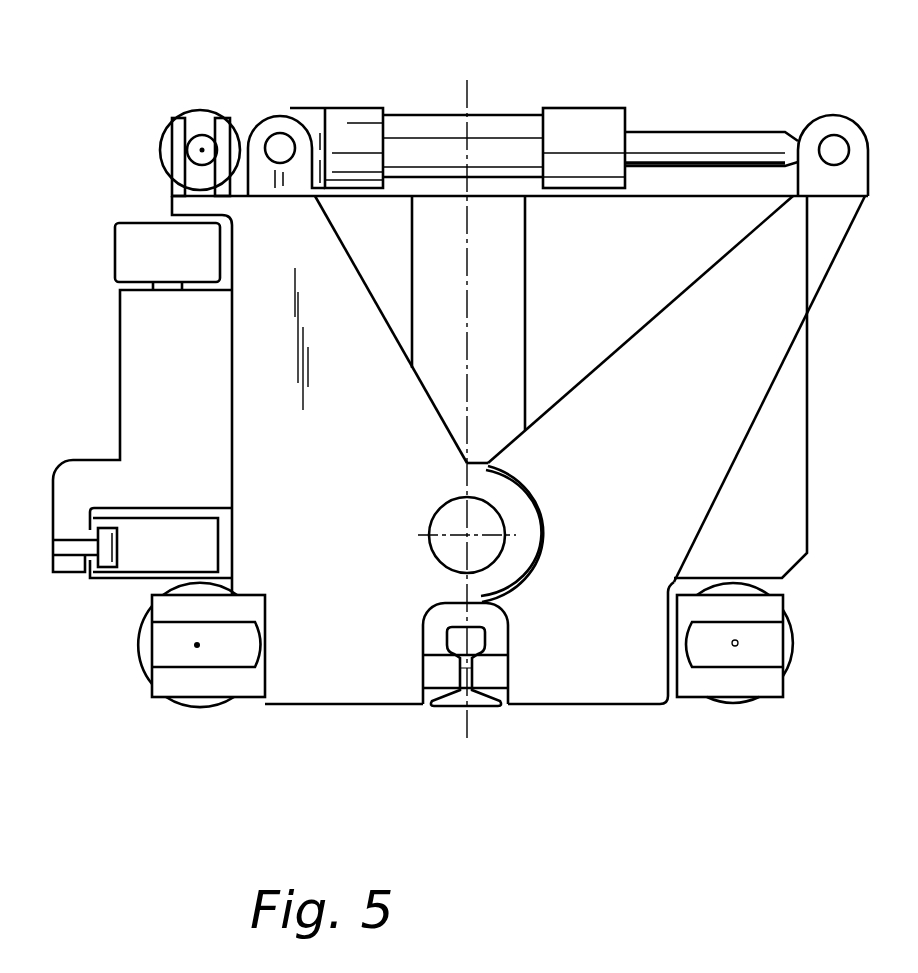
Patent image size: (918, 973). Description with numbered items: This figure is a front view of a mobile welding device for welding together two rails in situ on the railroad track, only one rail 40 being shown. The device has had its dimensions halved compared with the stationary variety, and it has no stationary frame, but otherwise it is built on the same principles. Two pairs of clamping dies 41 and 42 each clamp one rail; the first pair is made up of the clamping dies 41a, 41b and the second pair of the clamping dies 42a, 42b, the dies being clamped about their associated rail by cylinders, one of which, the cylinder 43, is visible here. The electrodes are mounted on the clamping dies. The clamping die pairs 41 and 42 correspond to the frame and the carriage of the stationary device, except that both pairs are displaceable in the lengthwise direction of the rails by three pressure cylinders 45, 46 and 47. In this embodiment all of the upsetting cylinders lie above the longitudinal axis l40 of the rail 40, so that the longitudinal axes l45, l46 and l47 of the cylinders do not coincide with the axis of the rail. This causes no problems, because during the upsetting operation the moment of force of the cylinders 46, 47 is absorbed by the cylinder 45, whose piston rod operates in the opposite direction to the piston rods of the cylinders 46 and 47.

The rail 40 is at (471, 702).
The clamping die pair 41 is at (648, 700).
The clamping die 41a is at (330, 678).
The clamping die 41b is at (757, 325).
The clamping die pair 42 is at (706, 196).
The clamping die 42a is at (399, 244).
The clamping die 42b is at (622, 287).
The cylinder 43 is at (595, 128).
The pressure cylinder 45 is at (180, 127).
The pressure cylinder 46 is at (157, 648).
The pressure cylinder 47 is at (785, 640).
The longitudinal axis l45 is at (204, 148).
The longitudinal axis l46 is at (197, 645).
The longitudinal axis l47 is at (738, 642).
The longitudinal axis l40 is at (462, 670).